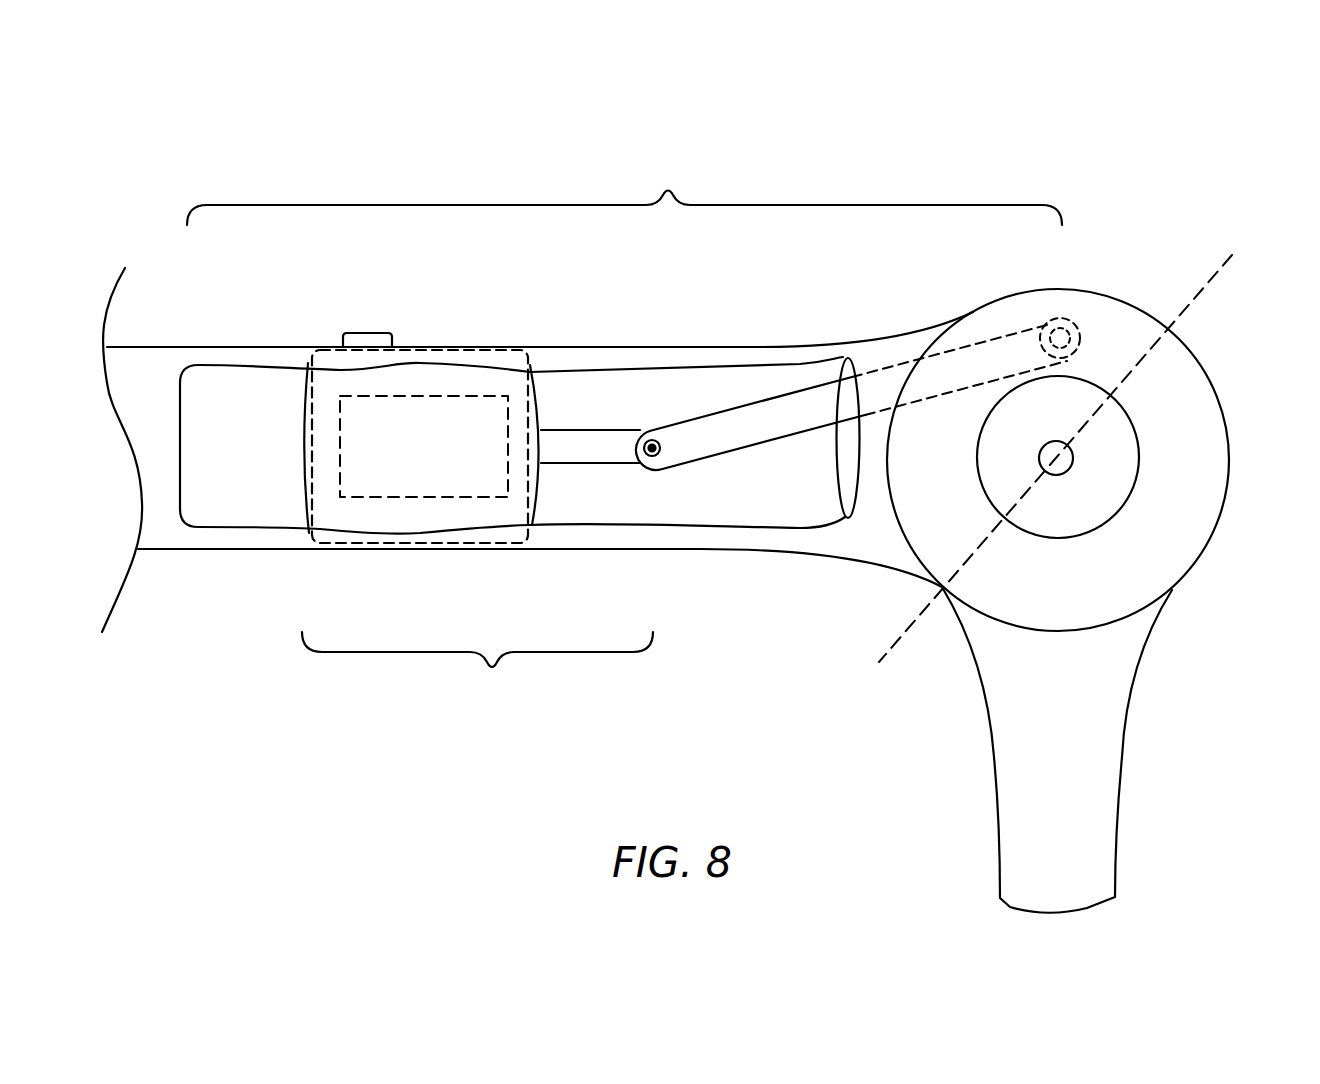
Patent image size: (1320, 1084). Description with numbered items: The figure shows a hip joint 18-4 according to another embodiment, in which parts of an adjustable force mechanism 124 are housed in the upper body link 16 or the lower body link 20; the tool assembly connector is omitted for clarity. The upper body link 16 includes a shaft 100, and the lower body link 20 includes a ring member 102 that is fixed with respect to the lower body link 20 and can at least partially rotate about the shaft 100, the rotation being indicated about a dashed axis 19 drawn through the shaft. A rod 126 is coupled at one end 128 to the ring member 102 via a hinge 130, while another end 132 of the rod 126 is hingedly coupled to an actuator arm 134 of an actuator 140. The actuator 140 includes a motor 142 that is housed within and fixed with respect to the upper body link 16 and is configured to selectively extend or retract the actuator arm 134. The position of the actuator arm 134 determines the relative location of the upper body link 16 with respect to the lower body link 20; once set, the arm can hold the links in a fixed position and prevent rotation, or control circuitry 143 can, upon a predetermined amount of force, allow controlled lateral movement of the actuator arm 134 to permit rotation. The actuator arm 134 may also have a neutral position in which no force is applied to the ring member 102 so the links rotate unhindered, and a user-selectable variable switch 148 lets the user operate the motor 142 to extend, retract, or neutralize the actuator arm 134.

The upper body link 16 is at (155, 352).
The hip joint 18-4 is at (1160, 122).
The rotational axis 19 is at (1222, 272).
The lower body link 20 is at (1102, 830).
The shaft 100 is at (1106, 481).
The ring member 102 is at (1162, 578).
The adjustable force mechanism 124 is at (624, 192).
The rod 126 is at (697, 448).
The one end 128 is at (1037, 303).
The hinge 130 is at (1067, 333).
The another end 132 is at (658, 400).
The actuator arm 134 is at (588, 452).
The actuator 140 is at (477, 525).
The motor 142 is at (303, 467).
The control circuitry 143 is at (409, 482).
The user-selectable variable switch 148 is at (370, 337).